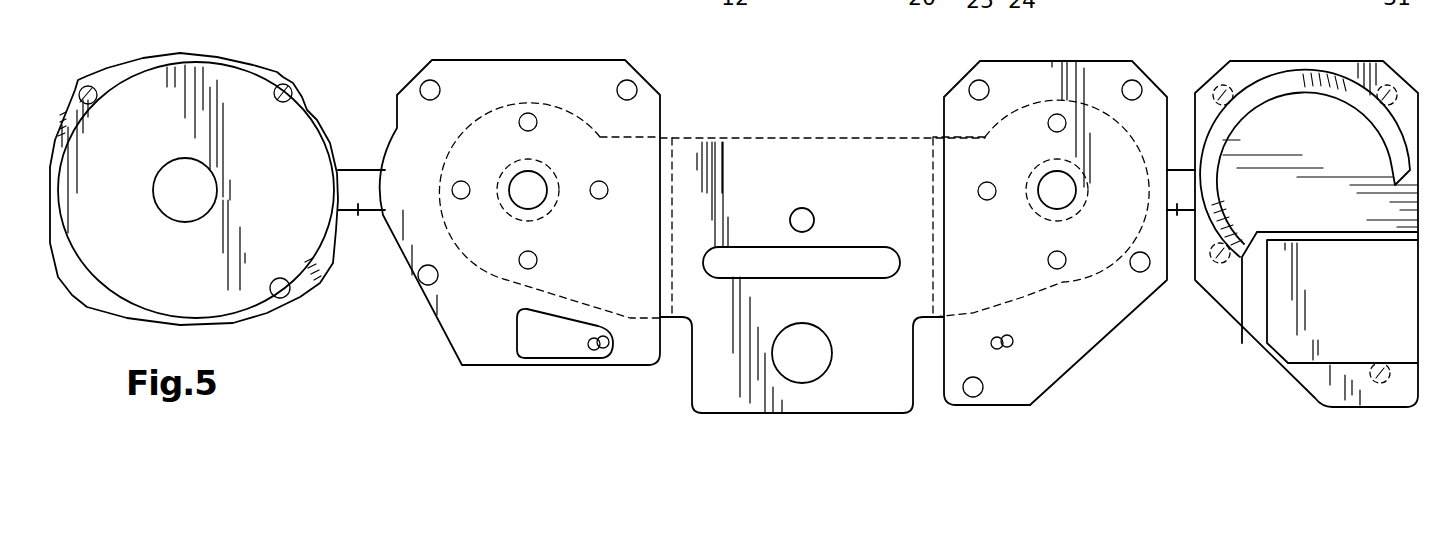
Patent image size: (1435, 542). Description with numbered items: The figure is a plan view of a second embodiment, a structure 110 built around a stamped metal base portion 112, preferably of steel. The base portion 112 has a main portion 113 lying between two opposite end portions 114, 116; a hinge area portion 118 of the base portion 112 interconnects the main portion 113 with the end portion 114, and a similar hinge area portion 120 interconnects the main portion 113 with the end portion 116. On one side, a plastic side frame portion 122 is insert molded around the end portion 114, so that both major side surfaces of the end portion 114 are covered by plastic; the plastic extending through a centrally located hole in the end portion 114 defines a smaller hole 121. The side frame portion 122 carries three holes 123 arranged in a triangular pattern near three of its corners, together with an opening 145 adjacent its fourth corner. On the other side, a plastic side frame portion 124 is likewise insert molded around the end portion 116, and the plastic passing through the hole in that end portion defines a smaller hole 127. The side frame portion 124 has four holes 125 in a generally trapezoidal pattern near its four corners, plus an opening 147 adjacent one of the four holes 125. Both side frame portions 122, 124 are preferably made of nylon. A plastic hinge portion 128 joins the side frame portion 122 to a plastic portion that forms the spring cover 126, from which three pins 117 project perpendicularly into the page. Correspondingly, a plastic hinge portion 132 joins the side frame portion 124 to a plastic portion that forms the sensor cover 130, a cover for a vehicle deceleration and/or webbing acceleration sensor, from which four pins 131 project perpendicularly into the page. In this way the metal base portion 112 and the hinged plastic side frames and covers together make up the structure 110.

The structure 110 is at (400, 360).
The base portion 112 is at (717, 393).
The main portion 113 is at (790, 414).
The end portion 114 is at (507, 280).
The end portion 116 is at (1023, 297).
The pins 117 is at (277, 277).
The hinge area portion 118 is at (665, 315).
The hinge area portion 120 is at (937, 312).
The hole 121 is at (535, 190).
The side frame portion 122 is at (637, 345).
The holes 123 is at (627, 90).
The side frame portion 124 is at (1017, 393).
The holes 125 is at (1135, 89).
The spring cover 126 is at (250, 287).
The hole 127 is at (1048, 196).
The hinge portion 128 is at (360, 232).
The sensor cover 130 is at (1306, 236).
The pins 131 is at (1222, 250).
The hinge portion 132 is at (1177, 205).
The opening 145 is at (590, 338).
The opening 147 is at (1000, 333).